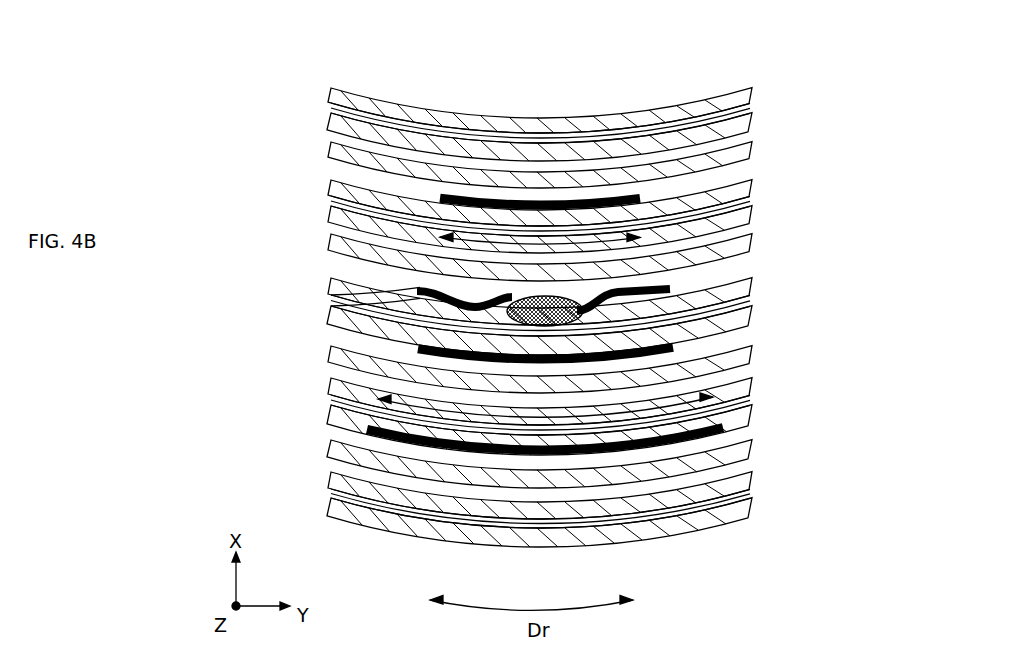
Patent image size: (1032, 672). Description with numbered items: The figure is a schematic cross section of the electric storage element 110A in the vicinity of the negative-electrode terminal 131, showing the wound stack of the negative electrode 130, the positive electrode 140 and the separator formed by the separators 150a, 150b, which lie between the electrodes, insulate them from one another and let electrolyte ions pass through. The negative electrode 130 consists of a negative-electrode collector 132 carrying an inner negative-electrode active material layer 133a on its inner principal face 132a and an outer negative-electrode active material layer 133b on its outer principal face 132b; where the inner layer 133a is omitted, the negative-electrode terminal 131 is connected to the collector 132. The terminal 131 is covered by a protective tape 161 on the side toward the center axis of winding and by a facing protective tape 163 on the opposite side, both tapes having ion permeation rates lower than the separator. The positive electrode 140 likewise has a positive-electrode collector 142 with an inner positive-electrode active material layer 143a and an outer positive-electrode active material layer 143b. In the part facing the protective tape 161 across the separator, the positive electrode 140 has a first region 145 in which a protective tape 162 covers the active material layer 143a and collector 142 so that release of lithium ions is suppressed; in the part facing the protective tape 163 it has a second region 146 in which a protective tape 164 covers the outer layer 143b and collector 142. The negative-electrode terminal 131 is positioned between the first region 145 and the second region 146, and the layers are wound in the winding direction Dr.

The electric storage element 110A is at (706, 62).
The negative electrode 130 is at (838, 28).
The negative-electrode terminal 131 is at (655, 150).
The negative-electrode collector 132 is at (750, 108).
The principal face 132a is at (333, 294).
The principal face 132b is at (330, 307).
The negative-electrode active material layer 133a is at (752, 92).
The negative-electrode active material layer 133b is at (748, 122).
The positive electrode 140 is at (838, 140).
The positive-electrode collector 142 is at (750, 201).
The positive-electrode active material layer 143a is at (752, 185).
The positive-electrode active material layer 143b is at (748, 215).
The first region 145 is at (574, 194).
The second region 146 is at (457, 442).
The separator 150a is at (333, 150).
The separator 150b is at (333, 243).
The protective tape 161 is at (418, 290).
The protective tape 162 is at (510, 296).
The protective tape 163 is at (392, 362).
The protective tape 164 is at (566, 455).